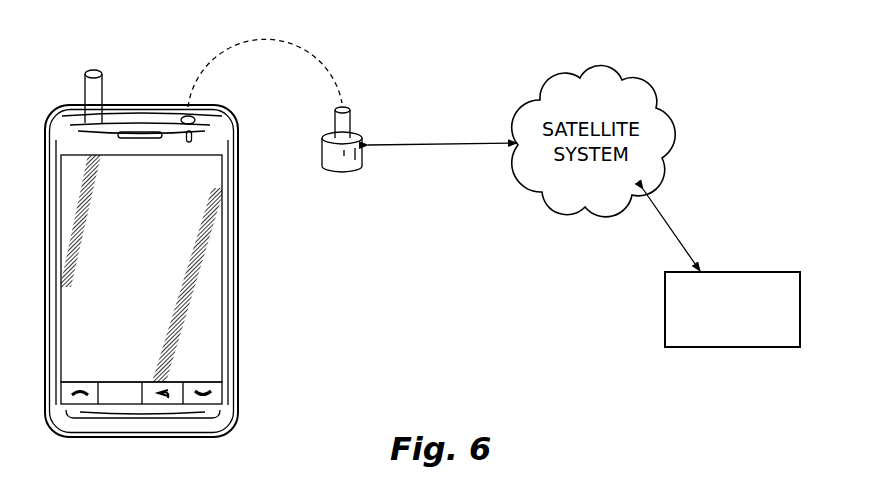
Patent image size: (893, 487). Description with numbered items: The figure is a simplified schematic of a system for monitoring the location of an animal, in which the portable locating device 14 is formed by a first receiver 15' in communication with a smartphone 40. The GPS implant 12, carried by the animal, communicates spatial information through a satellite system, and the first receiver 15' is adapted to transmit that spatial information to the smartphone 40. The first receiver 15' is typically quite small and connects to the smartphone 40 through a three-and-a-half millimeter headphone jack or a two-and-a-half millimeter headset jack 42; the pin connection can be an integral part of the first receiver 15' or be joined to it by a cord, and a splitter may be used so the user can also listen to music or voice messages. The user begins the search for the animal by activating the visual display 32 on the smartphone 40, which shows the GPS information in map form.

The GPS implant 12 is at (737, 272).
The portable locating device 14 is at (330, 250).
The first receiver 15' is at (383, 132).
The visual display 32 is at (200, 302).
The smartphone 40 is at (236, 388).
The headset jack 42 is at (197, 116).